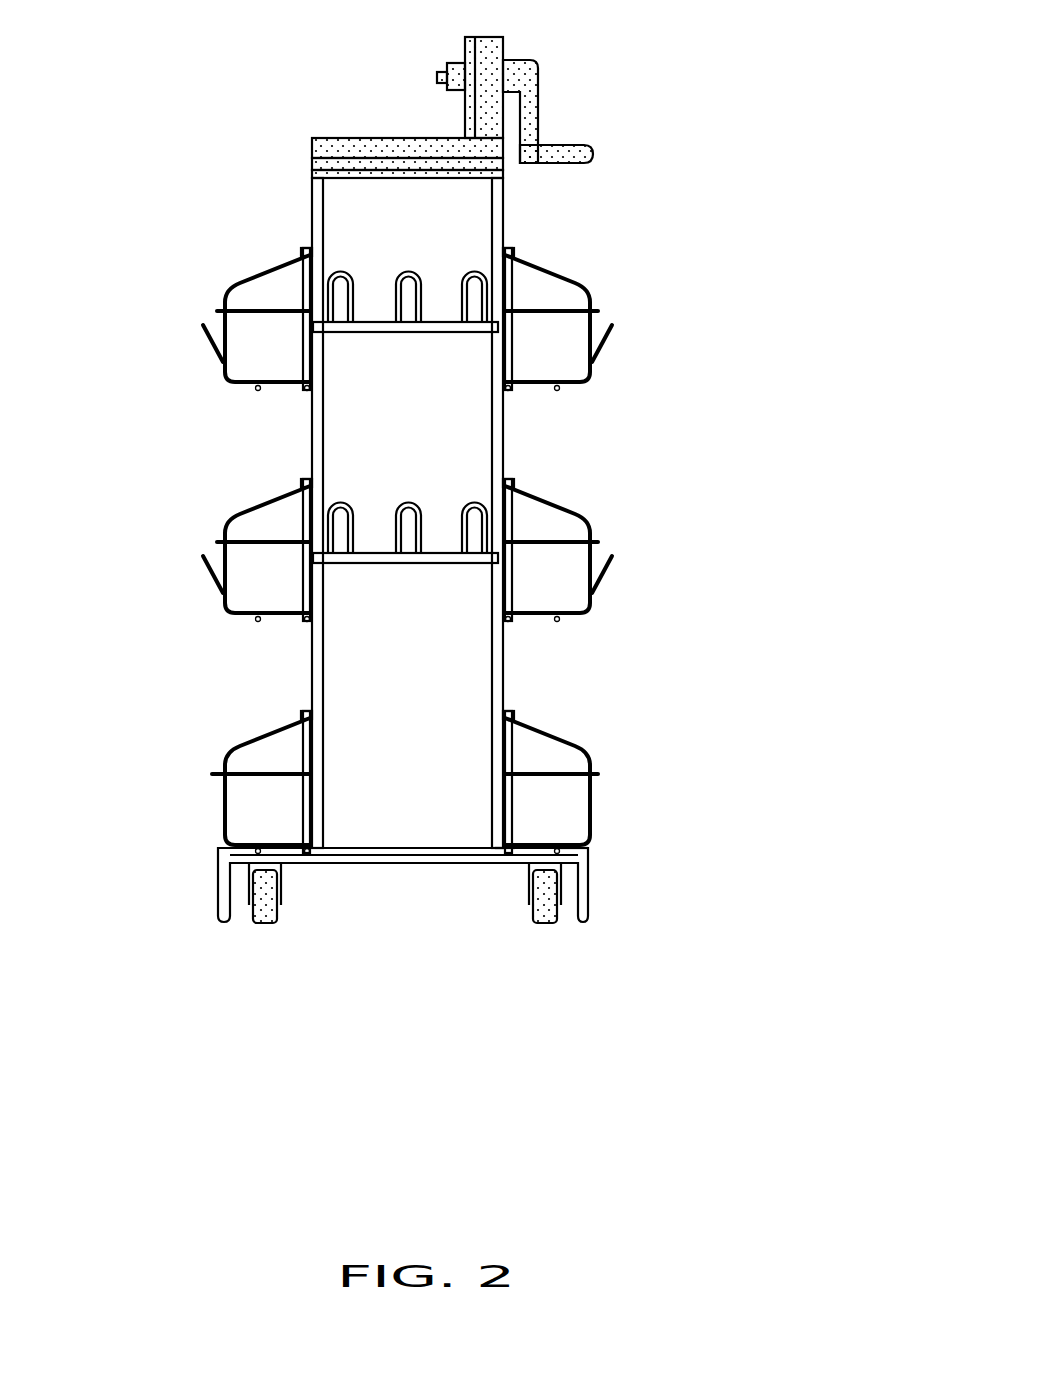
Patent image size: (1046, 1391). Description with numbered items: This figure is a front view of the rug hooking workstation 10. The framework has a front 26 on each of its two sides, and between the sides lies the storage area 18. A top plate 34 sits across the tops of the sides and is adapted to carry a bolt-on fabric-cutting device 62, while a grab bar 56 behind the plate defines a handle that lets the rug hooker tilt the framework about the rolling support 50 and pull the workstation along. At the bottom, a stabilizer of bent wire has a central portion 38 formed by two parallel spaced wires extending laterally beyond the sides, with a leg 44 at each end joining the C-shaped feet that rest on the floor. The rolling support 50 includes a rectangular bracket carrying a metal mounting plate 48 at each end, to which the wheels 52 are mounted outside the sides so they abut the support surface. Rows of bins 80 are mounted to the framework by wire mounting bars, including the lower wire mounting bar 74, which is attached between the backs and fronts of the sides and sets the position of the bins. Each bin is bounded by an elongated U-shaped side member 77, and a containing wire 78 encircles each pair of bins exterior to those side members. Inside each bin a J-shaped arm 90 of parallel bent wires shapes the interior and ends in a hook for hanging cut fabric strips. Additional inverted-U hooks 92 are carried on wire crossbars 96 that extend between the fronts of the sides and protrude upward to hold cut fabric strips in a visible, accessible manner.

The rug hooking workstation 10 is at (200, 172).
The storage area 18 is at (404, 907).
The front 26 is at (310, 443).
The top plate 34 is at (338, 157).
The central portion 38 is at (392, 857).
The leg 44 is at (583, 897).
The mounting plate 48 is at (587, 848).
The rolling support 50 is at (602, 854).
The wheels 52 is at (260, 897).
The grab bar 56 is at (467, 175).
The bolt-on fabric-cutting device 62 is at (493, 148).
The lower wire mounting bar 74 is at (500, 847).
The elongated U-shaped side member 77 is at (560, 737).
The containing wire 78 is at (592, 775).
The bin 80 is at (530, 528).
The J-shaped arm 90 is at (512, 712).
The hooks 92 is at (327, 273).
The wire crossbars 96 is at (320, 327).